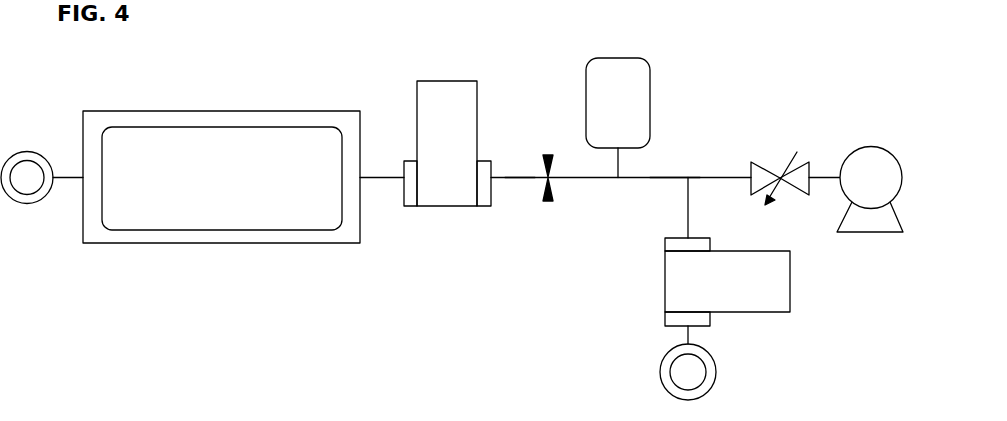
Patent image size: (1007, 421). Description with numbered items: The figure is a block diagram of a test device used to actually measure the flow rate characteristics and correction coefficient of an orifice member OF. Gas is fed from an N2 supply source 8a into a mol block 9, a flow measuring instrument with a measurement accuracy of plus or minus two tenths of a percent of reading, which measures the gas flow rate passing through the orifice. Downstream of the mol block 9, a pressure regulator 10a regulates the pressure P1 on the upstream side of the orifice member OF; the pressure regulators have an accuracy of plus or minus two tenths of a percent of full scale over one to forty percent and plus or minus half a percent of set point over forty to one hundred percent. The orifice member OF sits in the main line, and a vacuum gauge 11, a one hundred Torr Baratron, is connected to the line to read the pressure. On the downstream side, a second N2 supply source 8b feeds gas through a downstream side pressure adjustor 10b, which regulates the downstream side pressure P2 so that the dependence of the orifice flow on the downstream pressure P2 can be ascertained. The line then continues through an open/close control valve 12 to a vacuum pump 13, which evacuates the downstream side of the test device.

The N2 supply source 8a is at (23, 148).
The N2 supply source 8b is at (718, 368).
The mol block 9 is at (205, 110).
The pressure regulator 10a is at (449, 207).
The pressure regulator 10b is at (663, 288).
The vacuum gauge 11 is at (652, 107).
The open/close control valve 12 is at (765, 165).
The vacuum pump 13 is at (872, 147).
The upstream side pressure P1 is at (519, 175).
The downstream side pressure P2 is at (665, 177).
The orifice member OF is at (553, 193).